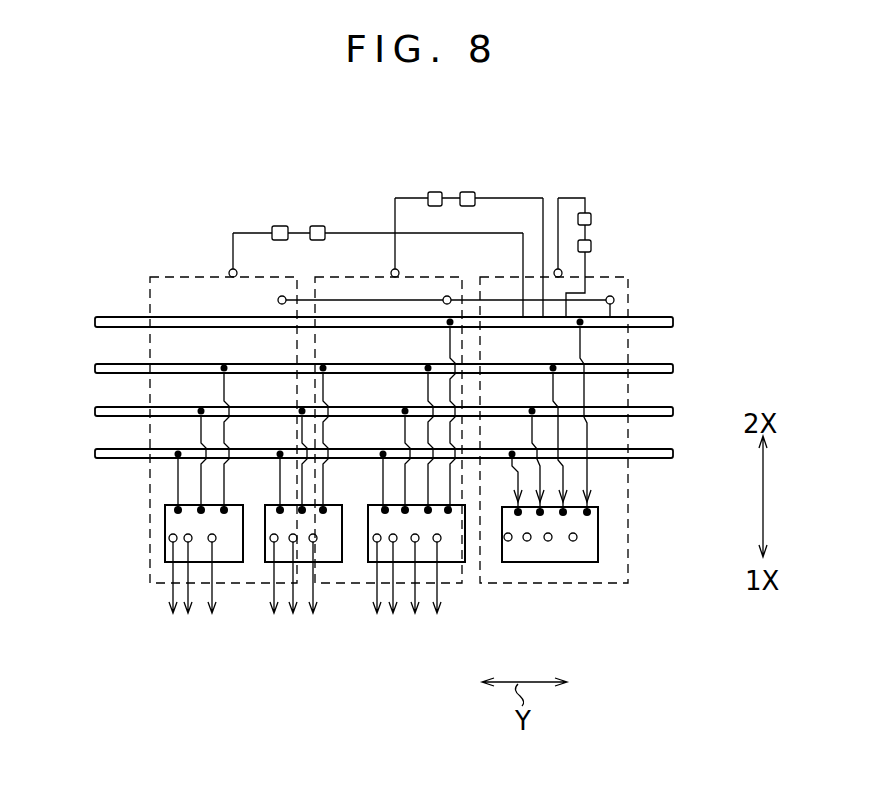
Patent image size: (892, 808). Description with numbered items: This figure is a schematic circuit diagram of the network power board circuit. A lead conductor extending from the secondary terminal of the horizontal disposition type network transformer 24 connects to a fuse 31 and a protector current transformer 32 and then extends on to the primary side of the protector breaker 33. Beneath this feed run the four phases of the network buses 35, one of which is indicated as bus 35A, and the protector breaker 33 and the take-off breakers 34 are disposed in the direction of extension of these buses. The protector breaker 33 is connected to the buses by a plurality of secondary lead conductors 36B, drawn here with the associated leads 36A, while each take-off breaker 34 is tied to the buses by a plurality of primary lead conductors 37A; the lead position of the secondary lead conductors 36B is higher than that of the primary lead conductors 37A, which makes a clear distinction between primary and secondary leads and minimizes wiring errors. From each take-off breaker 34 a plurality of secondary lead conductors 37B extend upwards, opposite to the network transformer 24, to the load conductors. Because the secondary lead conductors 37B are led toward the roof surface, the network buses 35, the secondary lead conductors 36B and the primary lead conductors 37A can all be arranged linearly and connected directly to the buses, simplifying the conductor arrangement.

The network transformer 24 is at (614, 294).
The fuse 31 is at (468, 192).
The protector current transformer 32 is at (437, 191).
The protector breaker 33 is at (590, 545).
The take-off breaker 34 is at (452, 547).
The network buses 35 is at (92, 307).
The bus line 35A is at (652, 363).
The input lines 36A is at (590, 480).
The secondary lead conductors of the protector breaker 36B is at (577, 520).
The primary lead conductors of the take-off breaker 37A is at (177, 483).
The secondary lead conductors of the take-off breaker 37B is at (272, 613).